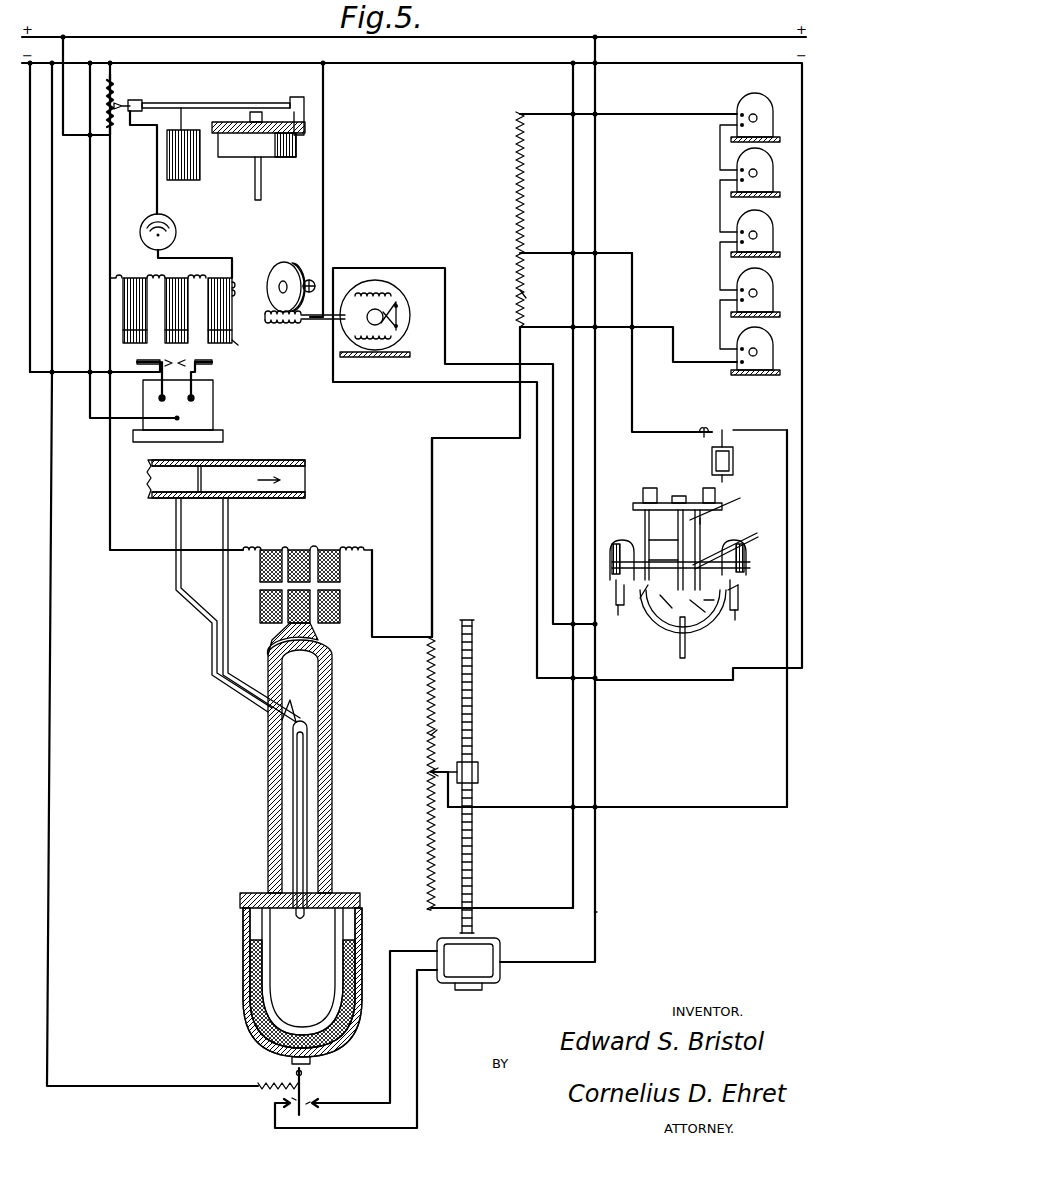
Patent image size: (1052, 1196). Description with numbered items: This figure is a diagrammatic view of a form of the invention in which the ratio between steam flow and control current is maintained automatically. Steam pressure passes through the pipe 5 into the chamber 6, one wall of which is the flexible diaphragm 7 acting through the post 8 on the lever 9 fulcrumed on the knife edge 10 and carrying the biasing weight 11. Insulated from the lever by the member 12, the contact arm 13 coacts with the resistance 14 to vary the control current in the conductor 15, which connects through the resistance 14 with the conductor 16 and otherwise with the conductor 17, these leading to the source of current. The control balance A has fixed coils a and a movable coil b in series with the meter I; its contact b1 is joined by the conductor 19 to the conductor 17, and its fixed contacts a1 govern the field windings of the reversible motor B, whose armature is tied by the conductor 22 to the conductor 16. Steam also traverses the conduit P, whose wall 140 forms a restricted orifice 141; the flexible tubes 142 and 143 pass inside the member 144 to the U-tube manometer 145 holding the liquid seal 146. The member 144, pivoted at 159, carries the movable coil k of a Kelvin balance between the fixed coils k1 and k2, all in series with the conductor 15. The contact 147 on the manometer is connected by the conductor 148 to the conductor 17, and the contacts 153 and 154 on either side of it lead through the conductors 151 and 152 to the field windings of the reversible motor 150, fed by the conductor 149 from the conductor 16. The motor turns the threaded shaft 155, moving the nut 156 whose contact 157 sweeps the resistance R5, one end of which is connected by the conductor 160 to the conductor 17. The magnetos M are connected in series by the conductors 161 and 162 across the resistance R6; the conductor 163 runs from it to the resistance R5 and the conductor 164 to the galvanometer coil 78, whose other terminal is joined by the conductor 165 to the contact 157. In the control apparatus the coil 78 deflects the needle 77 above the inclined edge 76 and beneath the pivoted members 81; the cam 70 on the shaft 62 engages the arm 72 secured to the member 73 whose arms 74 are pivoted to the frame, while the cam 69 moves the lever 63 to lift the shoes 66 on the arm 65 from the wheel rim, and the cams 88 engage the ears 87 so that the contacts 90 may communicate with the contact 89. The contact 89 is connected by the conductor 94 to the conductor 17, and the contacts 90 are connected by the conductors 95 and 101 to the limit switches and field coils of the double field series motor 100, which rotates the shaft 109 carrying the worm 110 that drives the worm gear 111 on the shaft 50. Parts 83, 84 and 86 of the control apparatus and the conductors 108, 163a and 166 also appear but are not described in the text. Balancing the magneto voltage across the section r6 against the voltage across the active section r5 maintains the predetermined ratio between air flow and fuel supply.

The pipe 5 is at (262, 186).
The chamber 6 is at (283, 152).
The flexible diaphragm 7 is at (247, 126).
The post 8 is at (263, 118).
The lever 9 is at (207, 103).
The knife edge 10 is at (300, 96).
The balance or biasing weight 11 is at (200, 180).
The member 12 is at (144, 105).
The contact arm 13 is at (124, 104).
The resistance 14 is at (110, 80).
The conductor 15 is at (158, 200).
The conductor 16 is at (470, 37).
The conductor 17 is at (418, 63).
The conductor 19 is at (30, 372).
The conductor 22 is at (90, 345).
The shaft 50 is at (309, 280).
The shaft 62 is at (751, 564).
The lever 63 is at (650, 540).
The arm 65 is at (704, 612).
The metal shoe 66 is at (642, 598).
The cam 69 is at (661, 597).
The second cam 70 is at (758, 534).
The arm 72 is at (684, 540).
The member 73 is at (702, 515).
The arms 74 is at (742, 498).
The upper edge 76 is at (678, 496).
The needle or pointer 77 is at (702, 438).
The movable coil 78 is at (734, 460).
The members 81 is at (648, 488).
The upright 83 is at (645, 528).
The base plate 84 is at (633, 508).
The bimetal strip 86 is at (683, 622).
The metal ears or projections 87 is at (617, 607).
The cams 88 is at (610, 553).
The contact 89 is at (686, 650).
The contacts 90 is at (616, 584).
The conductor 94 is at (802, 395).
The conductor 95 is at (734, 640).
The double field series motor 100 is at (372, 358).
The conductor 101 is at (600, 630).
The conductor 108 is at (324, 168).
The shaft 109 is at (320, 328).
The worm 110 is at (286, 325).
The worm gear 111 is at (282, 262).
The partition or wall 140 is at (228, 460).
The restricted orifice 141 is at (210, 480).
The flexible pressure tube 142 is at (176, 525).
The flexible pressure tube 143 is at (230, 521).
The member 144 is at (333, 763).
The U-tube manometer 145 is at (362, 936).
The liquid seal 146 is at (243, 995).
The conductive strip or contact 147 is at (302, 1088).
The conductor 148 is at (50, 803).
The conductor 149 is at (597, 915).
The reversible electric motor 150 is at (500, 982).
The conductor 151 is at (390, 1030).
The conductor 152 is at (418, 1028).
The contact 153 is at (312, 1105).
The contact 154 is at (292, 1100).
The threaded shaft 155 is at (473, 855).
The nut 156 is at (479, 772).
The contact 157 is at (437, 770).
The pivot 159 is at (300, 928).
The conductor 160 is at (522, 908).
The conductor 161 is at (640, 115).
The conductor 162 is at (660, 322).
The conductor 163 is at (434, 503).
The conductor 163a is at (434, 637).
The conductor 164 is at (633, 395).
The conductor 165 is at (678, 808).
The conductor 166 is at (527, 258).
The control balance A is at (237, 348).
The reversible motor B is at (222, 416).
The ammeter I is at (140, 230).
The magnetos M is at (737, 176).
The pipe or conduit P is at (298, 460).
The resistance R5 is at (421, 847).
The resistance R6 is at (515, 207).
The active resistance section r5 is at (430, 736).
The resistance section r6 is at (527, 298).
The fixed coils a is at (232, 318).
The fixed contacts a1 is at (162, 360).
The movable coil b is at (144, 272).
The contact b1 is at (176, 399).
The movable coil k is at (312, 623).
The fixed coil k1 is at (340, 622).
The fixed coil k2 is at (262, 624).